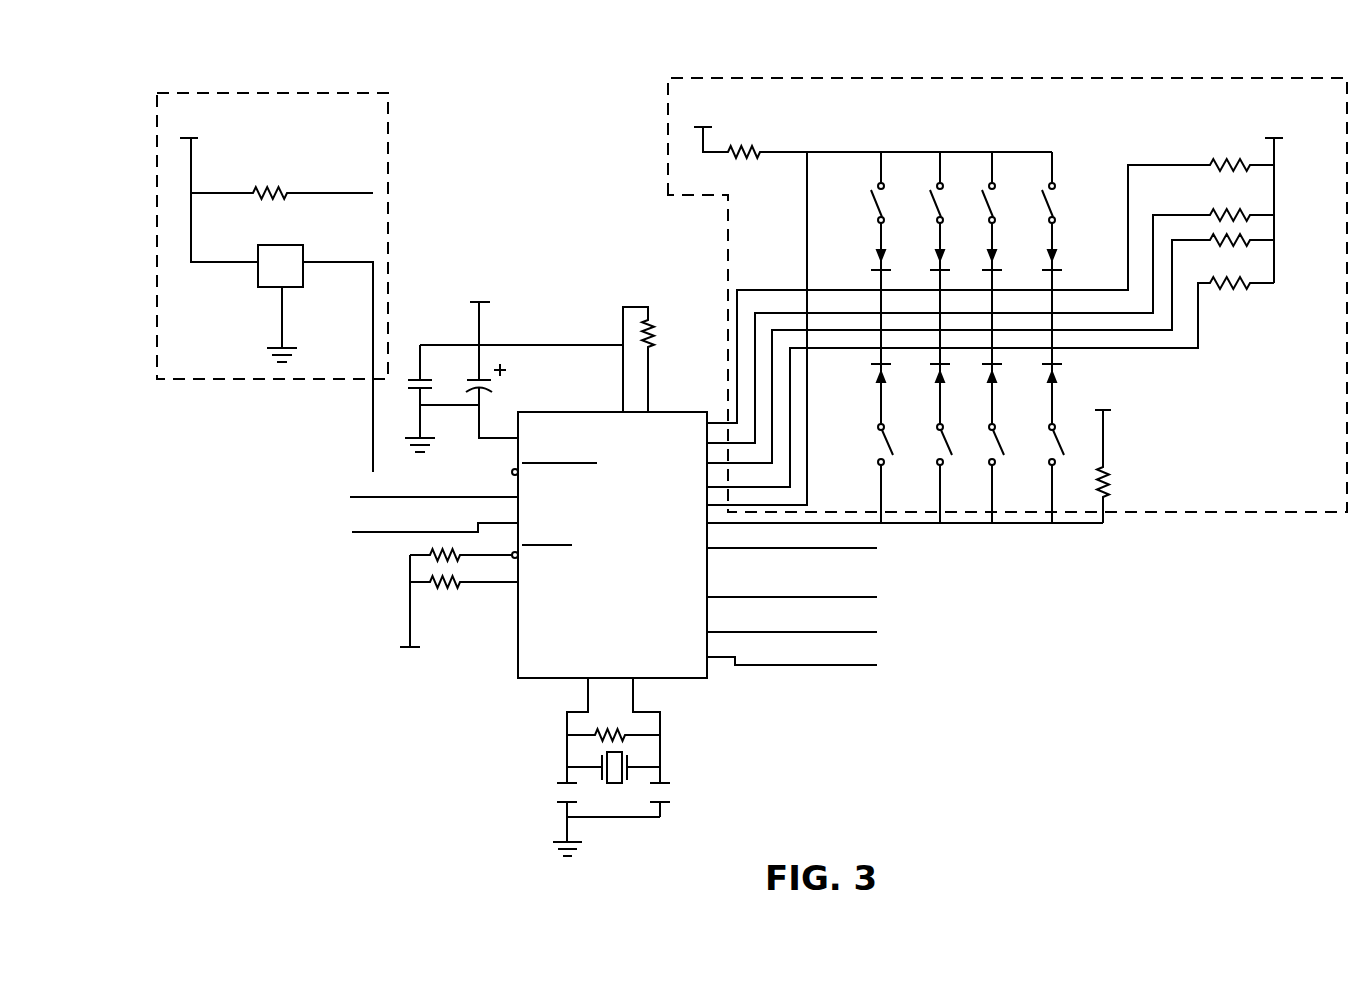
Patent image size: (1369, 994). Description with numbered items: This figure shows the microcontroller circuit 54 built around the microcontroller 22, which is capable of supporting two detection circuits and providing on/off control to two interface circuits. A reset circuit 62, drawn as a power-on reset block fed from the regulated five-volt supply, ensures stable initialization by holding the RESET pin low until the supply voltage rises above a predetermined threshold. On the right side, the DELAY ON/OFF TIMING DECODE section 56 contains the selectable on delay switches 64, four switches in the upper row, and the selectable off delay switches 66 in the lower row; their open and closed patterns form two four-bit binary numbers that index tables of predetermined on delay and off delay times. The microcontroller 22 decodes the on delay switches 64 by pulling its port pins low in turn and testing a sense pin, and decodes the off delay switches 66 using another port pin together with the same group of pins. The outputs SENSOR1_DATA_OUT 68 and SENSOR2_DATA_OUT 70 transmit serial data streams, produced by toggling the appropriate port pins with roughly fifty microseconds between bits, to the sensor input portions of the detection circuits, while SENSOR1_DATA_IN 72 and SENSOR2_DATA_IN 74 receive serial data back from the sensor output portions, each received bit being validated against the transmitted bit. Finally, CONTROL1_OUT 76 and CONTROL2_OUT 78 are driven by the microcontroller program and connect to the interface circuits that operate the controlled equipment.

The microcontroller 22 is at (540, 680).
The microcontroller circuit 54 is at (522, 166).
The DELAY ON/OFF TIMING DECODE section 56 is at (1243, 512).
The reset circuit 62 is at (273, 85).
The selectable on delay switches 64 is at (838, 210).
The selectable off delay switches 66 is at (873, 448).
The SENSOR1_DATA_OUT 68 is at (1100, 548).
The SENSOR2_DATA_OUT 70 is at (1100, 597).
The SENSOR1_DATA_IN 72 is at (198, 478).
The SENSOR2_DATA_IN 74 is at (198, 552).
The CONTROL1_OUT 76 is at (1053, 636).
The CONTROL2_OUT 78 is at (1056, 671).